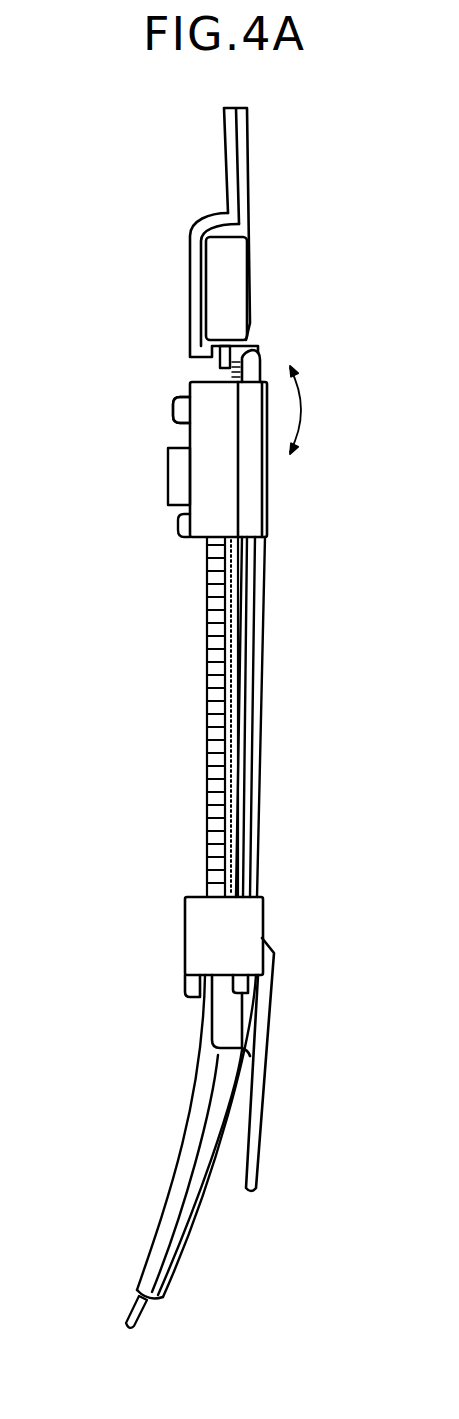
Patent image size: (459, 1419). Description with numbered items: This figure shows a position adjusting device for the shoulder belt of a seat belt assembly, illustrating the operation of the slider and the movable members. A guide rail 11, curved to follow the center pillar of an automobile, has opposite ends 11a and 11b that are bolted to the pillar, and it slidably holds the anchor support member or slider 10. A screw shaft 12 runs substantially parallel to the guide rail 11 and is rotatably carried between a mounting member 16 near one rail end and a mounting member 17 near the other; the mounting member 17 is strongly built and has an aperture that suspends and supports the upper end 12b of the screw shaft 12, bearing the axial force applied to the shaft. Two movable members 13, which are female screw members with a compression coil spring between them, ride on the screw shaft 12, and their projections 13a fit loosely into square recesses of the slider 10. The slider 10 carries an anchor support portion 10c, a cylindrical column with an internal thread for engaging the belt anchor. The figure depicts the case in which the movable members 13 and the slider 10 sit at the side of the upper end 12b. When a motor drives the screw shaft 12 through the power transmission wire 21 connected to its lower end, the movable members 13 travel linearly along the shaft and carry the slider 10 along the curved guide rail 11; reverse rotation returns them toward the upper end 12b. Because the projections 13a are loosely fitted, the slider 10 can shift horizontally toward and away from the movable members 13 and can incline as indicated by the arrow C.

The anchor support member (slider) 10 is at (270, 469).
The anchor support portion 10c is at (168, 480).
The guide rail 11 is at (261, 683).
The end of guide rail 11a is at (258, 203).
The end of guide rail 11b is at (259, 1124).
The screw shaft 12 is at (207, 805).
The upper end of screw shaft 12b is at (268, 354).
The movable members 13 is at (168, 424).
The projections 13a is at (173, 410).
The mounting member 16 is at (185, 948).
The mounting member 17 is at (187, 285).
The power transmission wire 21 is at (130, 1307).
The arrow indicating inclination C is at (309, 410).